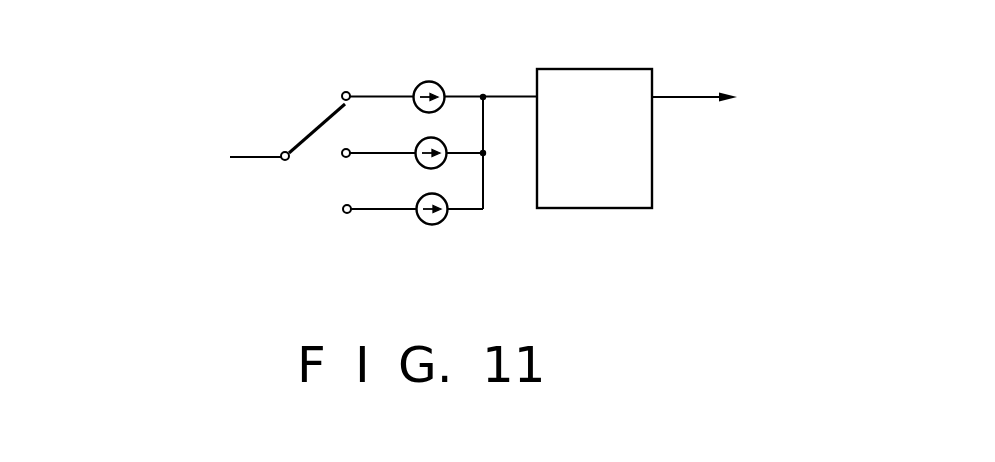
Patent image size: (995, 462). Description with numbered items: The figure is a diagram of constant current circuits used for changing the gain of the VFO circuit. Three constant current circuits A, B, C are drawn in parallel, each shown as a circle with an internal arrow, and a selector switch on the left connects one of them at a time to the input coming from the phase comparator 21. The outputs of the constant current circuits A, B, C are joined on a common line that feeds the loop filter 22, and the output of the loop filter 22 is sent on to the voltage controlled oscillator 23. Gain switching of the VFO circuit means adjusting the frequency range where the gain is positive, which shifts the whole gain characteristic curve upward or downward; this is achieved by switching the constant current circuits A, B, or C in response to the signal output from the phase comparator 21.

The phase comparator 21 is at (148, 140).
The loop filter 22 is at (616, 68).
The voltage controlled oscillator (VCO) 23 is at (763, 97).
The constant current circuit A is at (413, 86).
The constant current circuit B is at (415, 144).
The constant current circuit C is at (414, 199).